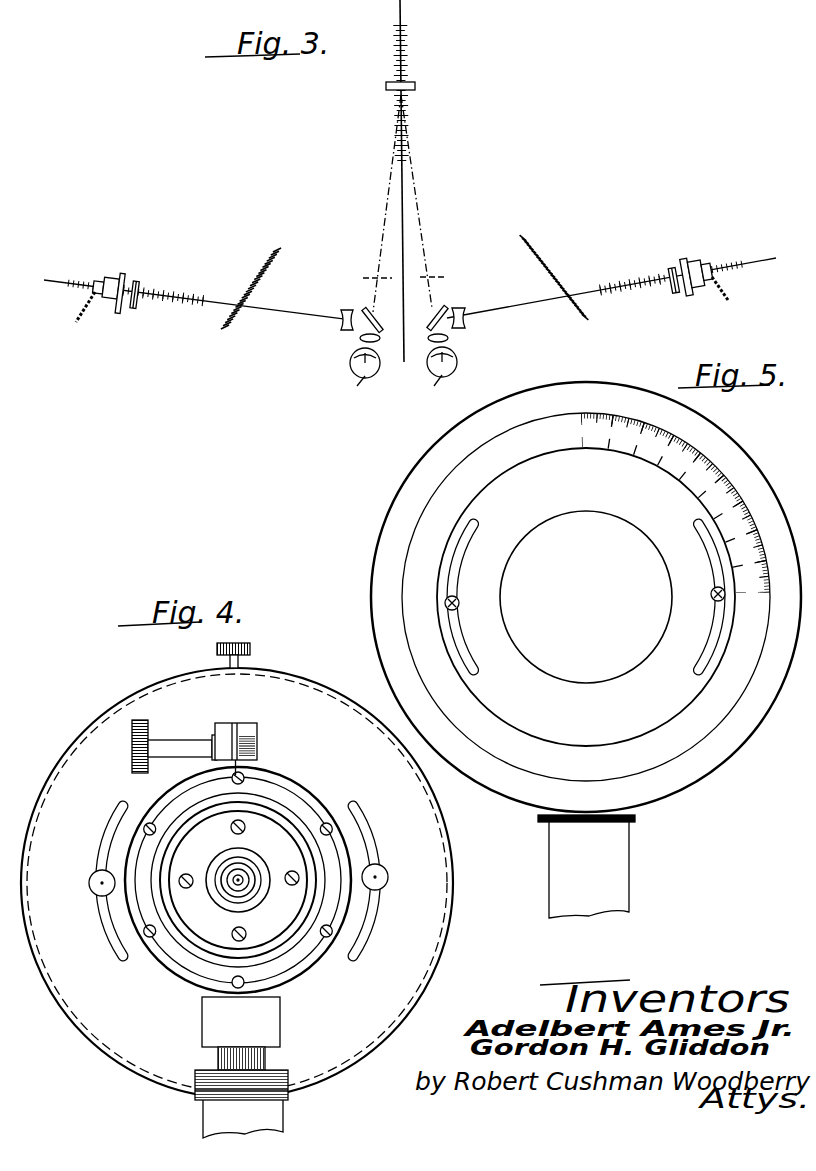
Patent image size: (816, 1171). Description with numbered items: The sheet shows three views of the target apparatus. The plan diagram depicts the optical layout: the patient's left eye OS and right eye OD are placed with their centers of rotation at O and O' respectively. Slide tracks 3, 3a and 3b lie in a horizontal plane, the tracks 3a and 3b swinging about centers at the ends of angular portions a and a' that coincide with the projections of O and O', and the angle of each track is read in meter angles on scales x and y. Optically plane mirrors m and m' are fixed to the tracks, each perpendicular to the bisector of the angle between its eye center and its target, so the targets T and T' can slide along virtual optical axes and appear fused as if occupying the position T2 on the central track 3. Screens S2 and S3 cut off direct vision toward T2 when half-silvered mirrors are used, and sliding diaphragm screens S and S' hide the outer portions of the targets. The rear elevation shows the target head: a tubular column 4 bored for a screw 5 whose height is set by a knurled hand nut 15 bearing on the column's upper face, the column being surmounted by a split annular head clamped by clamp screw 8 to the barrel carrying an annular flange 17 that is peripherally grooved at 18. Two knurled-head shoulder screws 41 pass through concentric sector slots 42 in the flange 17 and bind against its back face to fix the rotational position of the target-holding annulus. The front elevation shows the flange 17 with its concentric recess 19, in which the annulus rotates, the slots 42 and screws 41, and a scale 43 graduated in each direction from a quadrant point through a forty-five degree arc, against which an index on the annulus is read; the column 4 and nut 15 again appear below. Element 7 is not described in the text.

In FIG. 3, the slide track 3 is at (403, 198).
In FIG. 3, the virtual target position T2 is at (417, 86).
In FIG. 3, the slide track 3a is at (298, 318).
In FIG. 3, the slide track 3b is at (514, 305).
In FIG. 3, the scale x is at (262, 255).
In FIG. 3, the scale y is at (554, 274).
In FIG. 3, the target T is at (100, 312).
In FIG. 3, the sliding diaphragm screen S is at (141, 306).
In FIG. 3, the target T' is at (704, 289).
In FIG. 3, the sliding diaphragm screen S' is at (668, 295).
In FIG. 3, the screen S2 is at (366, 297).
In FIG. 3, the optically plane mirror m is at (343, 306).
In FIG. 3, the angular portion a is at (350, 341).
In FIG. 3, the left eye OS is at (346, 363).
In FIG. 3, the center of rotation O is at (364, 389).
In FIG. 3, the screen S3 is at (444, 296).
In FIG. 3, the optically plane mirror m' is at (456, 306).
In FIG. 3, the angular portion a' is at (456, 341).
In FIG. 3, the right eye OD is at (457, 367).
In FIG. 3, the center of rotation O' is at (431, 388).
In FIG. 5, the annular flange 17 is at (386, 524).
In FIG. 4, the annular flange 17 is at (127, 1040).
In FIG. 4, the peripheral groove 18 is at (436, 970).
In FIG. 5, the scale 43 is at (715, 478).
In FIG. 5, the concentric recess 19 is at (642, 511).
In FIG. 5, the concentric sector slot 42 is at (465, 553).
In FIG. 4, the concentric sector slot 42 is at (100, 853).
In FIG. 5, the knurled-head shoulder screw 41 is at (458, 600).
In FIG. 4, the knurled-head shoulder screw 41 is at (98, 888).
In FIG. 5, the knurled hand nut 15 is at (638, 818).
In FIG. 4, the knurled hand nut 15 is at (196, 1093).
In FIG. 5, the tubular column 4 is at (628, 893).
In FIG. 4, the tubular column 4 is at (283, 1128).
In FIG. 4, the screw 5 is at (268, 1060).
In FIG. 4, the clamp screw 8 is at (174, 748).
In FIG. 4, the clamp block 7 is at (241, 722).